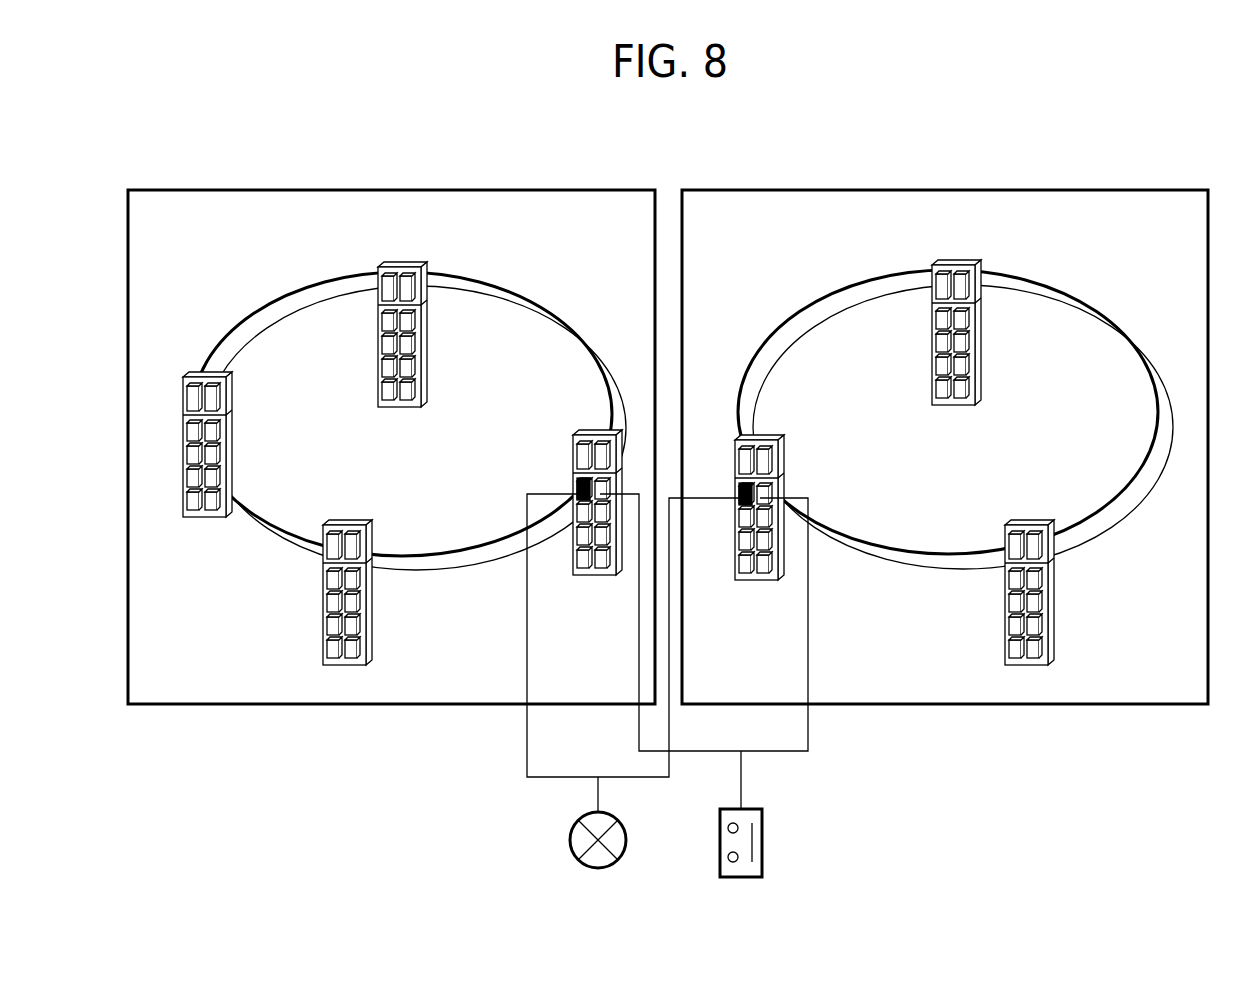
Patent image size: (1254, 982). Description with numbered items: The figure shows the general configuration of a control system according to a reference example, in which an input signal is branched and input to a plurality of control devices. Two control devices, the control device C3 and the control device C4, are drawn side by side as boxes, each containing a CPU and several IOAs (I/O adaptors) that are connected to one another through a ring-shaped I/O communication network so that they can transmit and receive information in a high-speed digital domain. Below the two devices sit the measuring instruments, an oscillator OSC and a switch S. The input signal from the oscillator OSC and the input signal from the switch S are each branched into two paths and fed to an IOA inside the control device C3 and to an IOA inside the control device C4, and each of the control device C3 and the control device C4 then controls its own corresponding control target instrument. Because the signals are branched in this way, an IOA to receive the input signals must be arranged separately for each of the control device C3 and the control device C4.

The control device C3 is at (480, 190).
The control device C4 is at (940, 190).
The oscillator OSC is at (570, 840).
The switch S is at (764, 840).